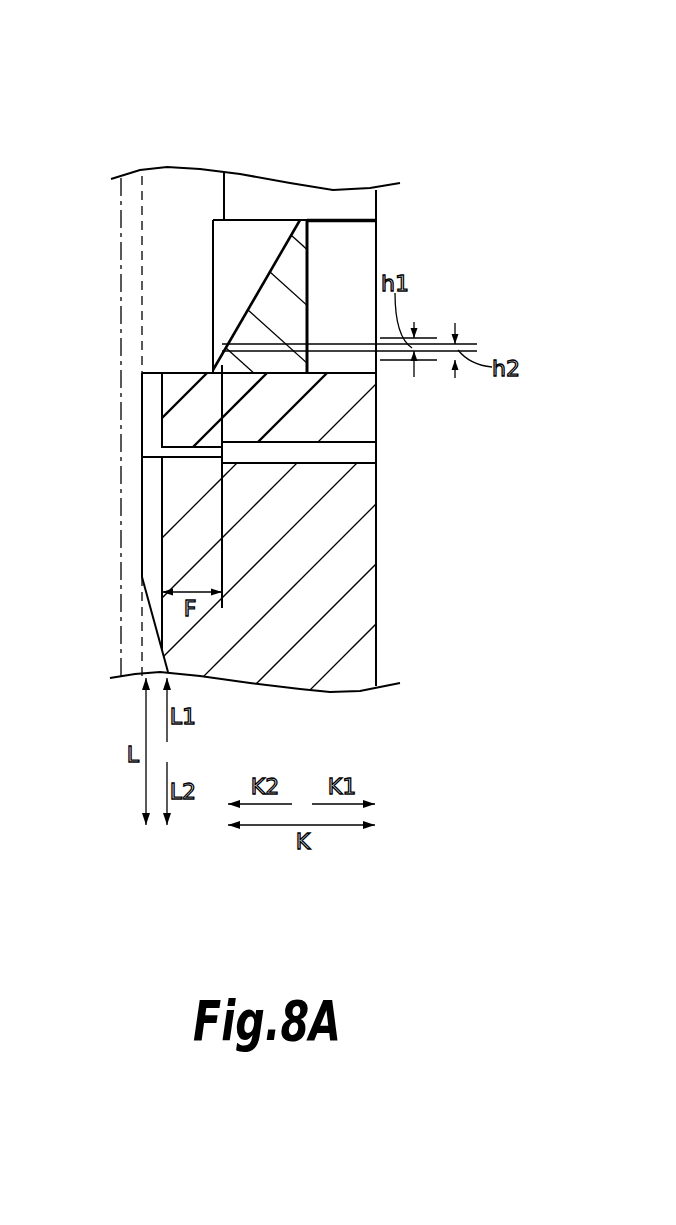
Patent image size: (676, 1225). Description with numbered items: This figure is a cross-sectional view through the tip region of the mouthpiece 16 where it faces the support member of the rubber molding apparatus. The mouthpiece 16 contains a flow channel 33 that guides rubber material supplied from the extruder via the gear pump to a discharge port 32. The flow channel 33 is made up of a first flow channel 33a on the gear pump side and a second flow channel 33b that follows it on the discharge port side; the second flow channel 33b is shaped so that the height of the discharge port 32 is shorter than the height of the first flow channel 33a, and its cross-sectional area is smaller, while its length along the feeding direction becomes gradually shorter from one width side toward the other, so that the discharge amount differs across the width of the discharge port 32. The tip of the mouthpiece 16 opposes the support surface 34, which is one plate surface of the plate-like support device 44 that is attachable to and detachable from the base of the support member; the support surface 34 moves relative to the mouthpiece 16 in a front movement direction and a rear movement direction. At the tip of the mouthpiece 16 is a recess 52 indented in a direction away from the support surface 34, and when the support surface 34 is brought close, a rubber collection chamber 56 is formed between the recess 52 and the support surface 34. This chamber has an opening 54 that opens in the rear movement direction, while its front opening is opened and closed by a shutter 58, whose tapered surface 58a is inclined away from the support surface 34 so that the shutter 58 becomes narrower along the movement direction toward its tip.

The mouthpiece 16 is at (273, 604).
The discharge port 32 is at (160, 341).
The flow channel 33 is at (319, 274).
The first flow channel 33a is at (307, 338).
The second flow channel 33b is at (206, 343).
The support surface 34 is at (153, 412).
The support device 44 is at (128, 152).
The recess 52 is at (162, 457).
The opening 54 is at (148, 267).
The rubber collection chamber 56 is at (152, 387).
The shutter 58 is at (319, 262).
The tapered surface 58a is at (257, 188).